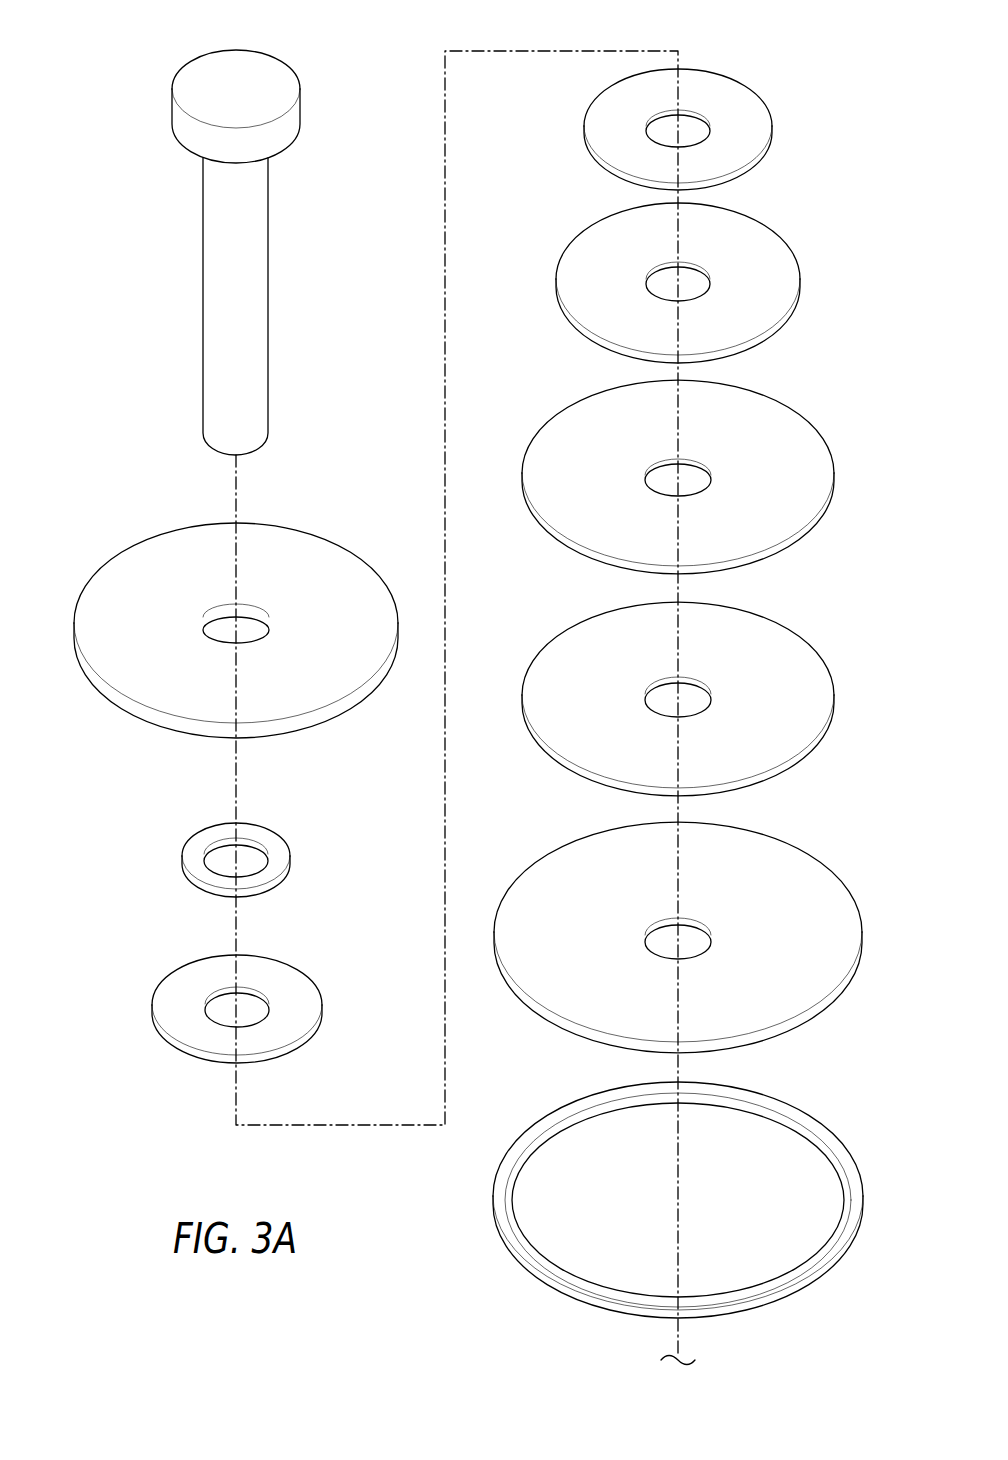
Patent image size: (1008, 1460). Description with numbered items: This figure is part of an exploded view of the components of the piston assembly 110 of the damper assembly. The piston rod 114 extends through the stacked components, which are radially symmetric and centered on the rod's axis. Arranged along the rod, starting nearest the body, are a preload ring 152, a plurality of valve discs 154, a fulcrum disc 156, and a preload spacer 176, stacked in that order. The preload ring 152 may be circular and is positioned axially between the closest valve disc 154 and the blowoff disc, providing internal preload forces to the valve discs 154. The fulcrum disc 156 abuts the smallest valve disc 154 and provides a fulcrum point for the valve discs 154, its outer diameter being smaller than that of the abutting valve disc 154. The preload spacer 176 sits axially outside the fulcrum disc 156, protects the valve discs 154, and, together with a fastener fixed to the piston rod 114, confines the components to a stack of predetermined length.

The piston assembly 110 is at (120, 86).
The piston rod 114 is at (203, 345).
The preload spacer 176 is at (137, 543).
The fulcrum disc 156 is at (168, 972).
The valve discs 154 is at (195, 838).
The preload ring 152 is at (786, 1102).